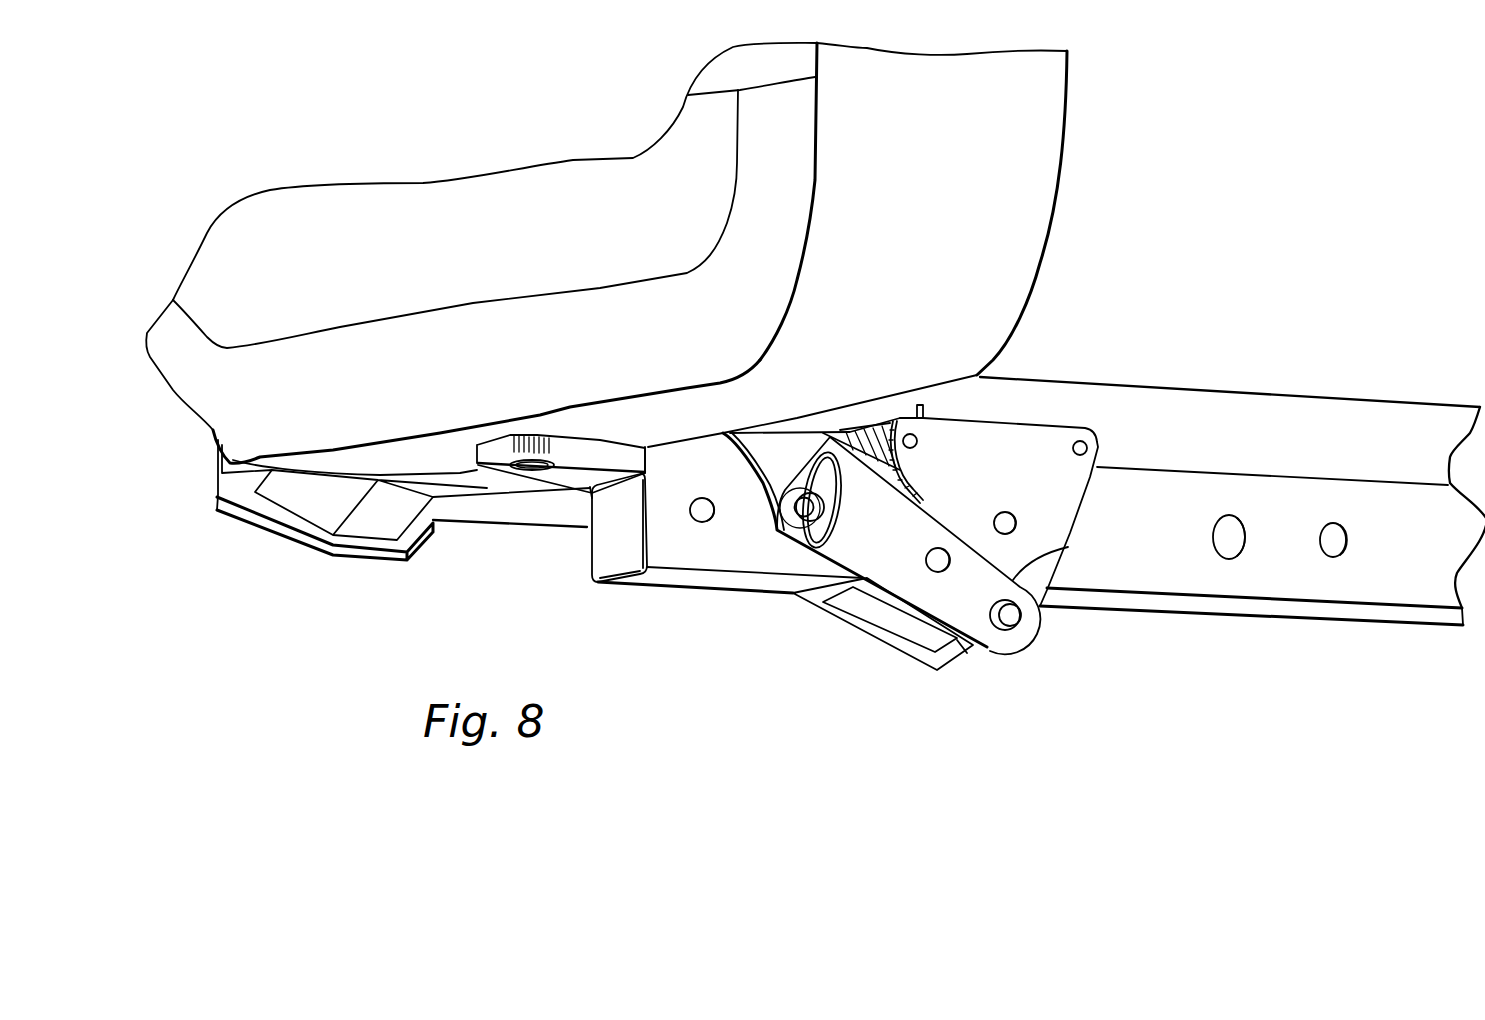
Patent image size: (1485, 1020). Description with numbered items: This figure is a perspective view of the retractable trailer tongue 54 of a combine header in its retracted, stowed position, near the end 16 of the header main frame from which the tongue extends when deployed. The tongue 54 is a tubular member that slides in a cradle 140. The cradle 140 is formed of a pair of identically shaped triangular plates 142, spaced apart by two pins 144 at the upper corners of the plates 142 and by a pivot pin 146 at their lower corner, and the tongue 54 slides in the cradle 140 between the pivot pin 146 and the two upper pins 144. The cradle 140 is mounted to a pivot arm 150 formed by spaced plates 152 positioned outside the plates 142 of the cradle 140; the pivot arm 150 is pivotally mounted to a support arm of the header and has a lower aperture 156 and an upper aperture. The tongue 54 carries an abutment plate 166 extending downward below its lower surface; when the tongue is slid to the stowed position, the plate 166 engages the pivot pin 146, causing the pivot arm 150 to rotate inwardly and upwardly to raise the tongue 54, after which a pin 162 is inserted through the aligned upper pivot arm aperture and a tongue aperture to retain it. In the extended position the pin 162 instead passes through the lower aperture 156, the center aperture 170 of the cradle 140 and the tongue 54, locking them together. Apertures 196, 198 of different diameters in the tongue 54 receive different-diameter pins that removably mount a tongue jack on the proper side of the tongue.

The end 16 is at (419, 216).
The trailer tongue 54 is at (1134, 613).
The cradle 140 is at (1023, 417).
The triangular plates 142 is at (857, 437).
The pins 144 is at (923, 432).
The pivot pin 146 is at (973, 653).
The pivot arm 150 is at (962, 505).
The spaced plates 152 is at (817, 613).
The lower aperture 156 is at (927, 563).
The pin 162 is at (777, 532).
The abutment plate 166 is at (897, 637).
The center aperture 170 is at (1017, 527).
The aperture 196 is at (1240, 560).
The aperture 198 is at (1343, 560).